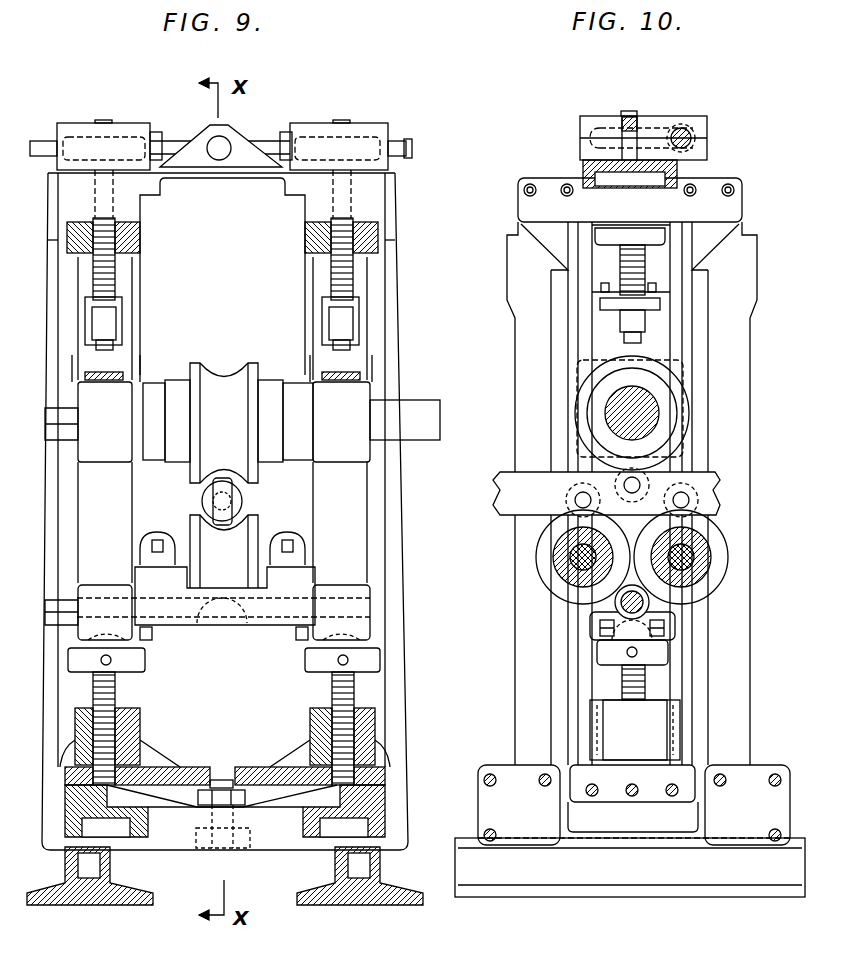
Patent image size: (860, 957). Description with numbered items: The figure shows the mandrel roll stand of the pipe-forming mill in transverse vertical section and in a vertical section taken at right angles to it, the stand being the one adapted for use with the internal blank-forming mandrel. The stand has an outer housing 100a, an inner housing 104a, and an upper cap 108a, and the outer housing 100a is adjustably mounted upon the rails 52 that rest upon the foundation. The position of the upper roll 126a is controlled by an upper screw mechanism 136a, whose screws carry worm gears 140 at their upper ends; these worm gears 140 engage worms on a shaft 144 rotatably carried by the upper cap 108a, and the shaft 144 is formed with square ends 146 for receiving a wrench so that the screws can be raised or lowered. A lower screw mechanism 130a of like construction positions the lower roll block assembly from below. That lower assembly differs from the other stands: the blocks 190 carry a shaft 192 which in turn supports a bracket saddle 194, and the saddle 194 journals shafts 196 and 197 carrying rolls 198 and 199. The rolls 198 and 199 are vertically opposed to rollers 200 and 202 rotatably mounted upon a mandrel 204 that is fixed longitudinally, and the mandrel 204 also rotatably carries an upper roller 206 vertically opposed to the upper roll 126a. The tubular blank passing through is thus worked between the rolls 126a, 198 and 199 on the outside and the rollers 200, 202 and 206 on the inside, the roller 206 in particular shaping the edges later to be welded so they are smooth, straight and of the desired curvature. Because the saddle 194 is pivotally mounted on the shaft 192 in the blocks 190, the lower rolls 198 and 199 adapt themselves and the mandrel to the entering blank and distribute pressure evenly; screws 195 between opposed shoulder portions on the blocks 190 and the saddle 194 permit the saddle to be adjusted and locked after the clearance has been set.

In FIG. 9, the rails 52 is at (313, 868).
In FIG. 10, the rails 52 is at (468, 840).
In FIG. 9, the outer housing 100a is at (404, 708).
In FIG. 9, the inner housing 104a is at (240, 777).
In FIG. 10, the inner housing 104a is at (583, 680).
In FIG. 10, the upper cap 108a is at (528, 205).
In FIG. 9, the upper roll 126a is at (230, 378).
In FIG. 10, the upper roll 126a is at (658, 386).
In FIG. 9, the lower screw mechanism 130a is at (335, 688).
In FIG. 9, the upper screw mechanism 136a is at (322, 263).
In FIG. 10, the upper screw mechanism 136a is at (645, 258).
In FIG. 9, the worm gears 140 is at (357, 133).
In FIG. 10, the worm gears 140 is at (656, 125).
In FIG. 9, the shaft 144 is at (265, 143).
In FIG. 10, the shaft 144 is at (690, 128).
In FIG. 9, the square ends 146 is at (401, 139).
In FIG. 9, the blocks 190 is at (100, 588).
In FIG. 9, the shaft 192 is at (377, 623).
In FIG. 10, the shaft 192 is at (614, 603).
In FIG. 9, the bracket saddle 194 is at (247, 620).
In FIG. 10, the bracket saddle 194 is at (598, 652).
In FIG. 9, the screws 195 is at (143, 634).
In FIG. 10, the screws 195 is at (598, 636).
In FIG. 10, the shaft 196 is at (555, 558).
In FIG. 10, the shaft 197 is at (692, 557).
In FIG. 9, the roll 198 is at (240, 559).
In FIG. 10, the roll 198 is at (538, 543).
In FIG. 10, the roll 199 is at (712, 536).
In FIG. 9, the roller 200 is at (231, 516).
In FIG. 10, the roller 200 is at (576, 500).
In FIG. 10, the roller 202 is at (690, 500).
In FIG. 9, the mandrel 204 is at (240, 501).
In FIG. 10, the mandrel 204 is at (720, 464).
In FIG. 9, the upper roller 206 is at (228, 484).
In FIG. 10, the upper roller 206 is at (637, 472).